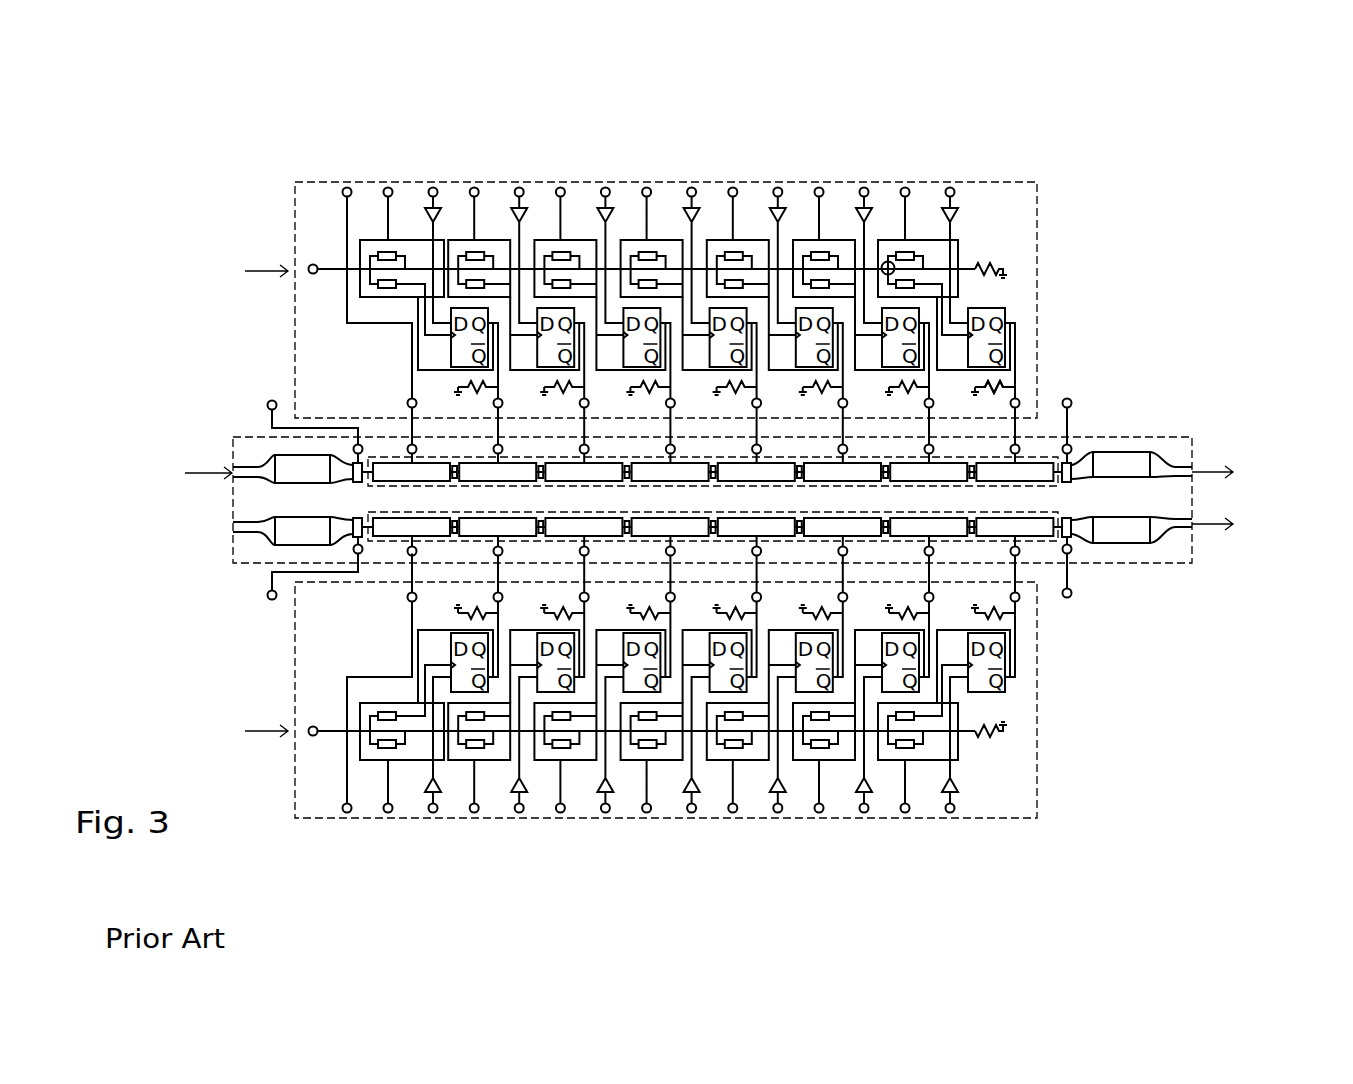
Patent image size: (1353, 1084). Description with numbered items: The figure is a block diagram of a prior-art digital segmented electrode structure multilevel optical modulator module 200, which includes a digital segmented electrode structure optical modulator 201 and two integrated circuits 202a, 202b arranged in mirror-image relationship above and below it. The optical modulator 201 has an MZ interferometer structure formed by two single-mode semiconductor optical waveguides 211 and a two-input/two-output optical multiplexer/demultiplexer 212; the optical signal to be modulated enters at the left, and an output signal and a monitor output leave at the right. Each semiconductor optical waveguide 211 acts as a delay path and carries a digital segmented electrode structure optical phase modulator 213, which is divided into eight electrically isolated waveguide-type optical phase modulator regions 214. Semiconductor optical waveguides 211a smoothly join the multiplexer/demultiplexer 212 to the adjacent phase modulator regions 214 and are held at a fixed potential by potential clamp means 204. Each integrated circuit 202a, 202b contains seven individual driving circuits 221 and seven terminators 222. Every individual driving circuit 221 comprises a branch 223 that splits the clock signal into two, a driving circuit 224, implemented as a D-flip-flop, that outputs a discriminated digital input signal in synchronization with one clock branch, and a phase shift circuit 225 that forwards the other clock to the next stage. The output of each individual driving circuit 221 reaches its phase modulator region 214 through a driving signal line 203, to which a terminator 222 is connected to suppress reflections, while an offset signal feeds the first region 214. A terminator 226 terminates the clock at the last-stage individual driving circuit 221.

The digital segmented electrode structure multilevel optical modulator module 200 is at (665, 90).
The digital segmented electrode structure optical modulator 201 is at (1174, 563).
The integrated circuit 202a is at (1037, 209).
The integrated circuit 202b is at (1037, 789).
The driving signal line 203 is at (410, 424).
The potential clamp means 204 is at (262, 592).
The single-mode semiconductor optical waveguide 211 is at (885, 520).
The semiconductor optical waveguide 211a is at (353, 463).
The optical multiplexer/demultiplexer 212 is at (283, 455).
The digital segmented electrode structure optical phase modulator 213 is at (438, 490).
The waveguide-type optical phase modulator region 214 is at (675, 525).
The individual driving circuit 221 is at (960, 251).
The terminator 222 is at (1003, 382).
The branch 223 is at (888, 261).
The driving circuit 224 is at (1005, 318).
The phase shift circuit 225 is at (912, 251).
The terminator 226 is at (1003, 727).